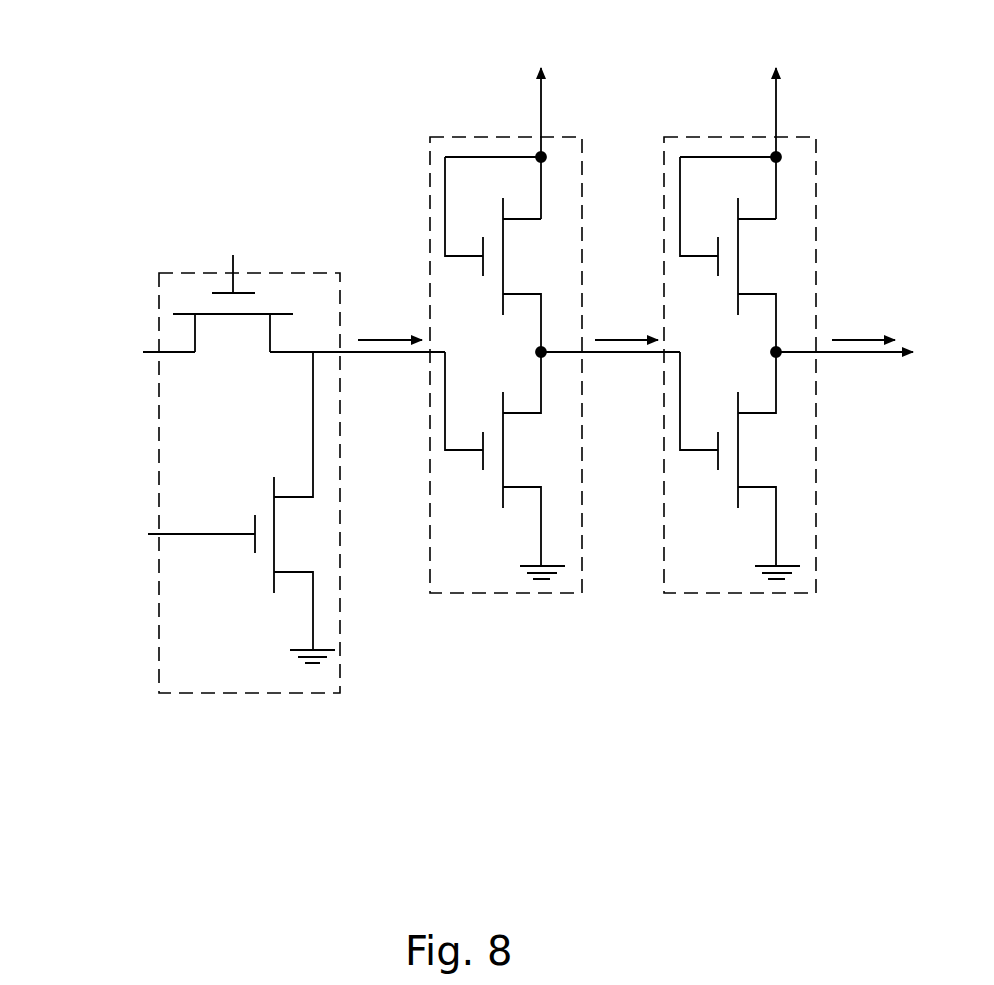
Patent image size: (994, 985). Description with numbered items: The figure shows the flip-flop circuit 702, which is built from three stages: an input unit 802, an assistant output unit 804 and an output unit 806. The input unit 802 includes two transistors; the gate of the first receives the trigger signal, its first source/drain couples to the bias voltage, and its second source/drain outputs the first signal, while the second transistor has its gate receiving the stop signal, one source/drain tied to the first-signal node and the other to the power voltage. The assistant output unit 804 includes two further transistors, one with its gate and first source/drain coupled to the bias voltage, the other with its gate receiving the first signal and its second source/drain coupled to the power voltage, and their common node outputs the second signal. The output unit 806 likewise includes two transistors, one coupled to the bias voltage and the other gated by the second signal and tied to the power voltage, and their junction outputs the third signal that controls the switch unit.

The flip-flop circuit 702 is at (180, 47).
The input unit 802 is at (310, 694).
The assistant output unit 804 is at (465, 137).
The output unit 806 is at (700, 137).